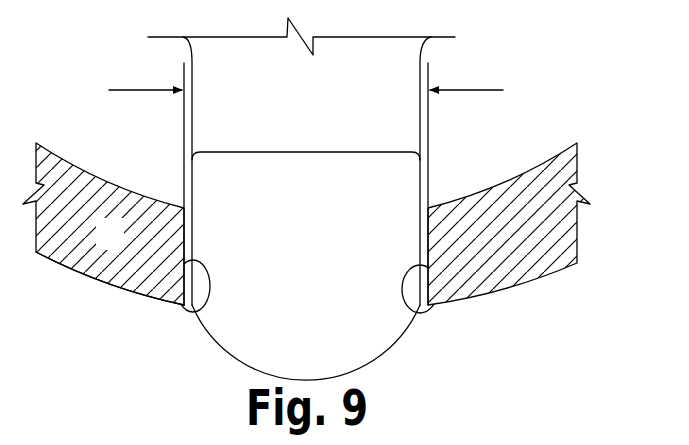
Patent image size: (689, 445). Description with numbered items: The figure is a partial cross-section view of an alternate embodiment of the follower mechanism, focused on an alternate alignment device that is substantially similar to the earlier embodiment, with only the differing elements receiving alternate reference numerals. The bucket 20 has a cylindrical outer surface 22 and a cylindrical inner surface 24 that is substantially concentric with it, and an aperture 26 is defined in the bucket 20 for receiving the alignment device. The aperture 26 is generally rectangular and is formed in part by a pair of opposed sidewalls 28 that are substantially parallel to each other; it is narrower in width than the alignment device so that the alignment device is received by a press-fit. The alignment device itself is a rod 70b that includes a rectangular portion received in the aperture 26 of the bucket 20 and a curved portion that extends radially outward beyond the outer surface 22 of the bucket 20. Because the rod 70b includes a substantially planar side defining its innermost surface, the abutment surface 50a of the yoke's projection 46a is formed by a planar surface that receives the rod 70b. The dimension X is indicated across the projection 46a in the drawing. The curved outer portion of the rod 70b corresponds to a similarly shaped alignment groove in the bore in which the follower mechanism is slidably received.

The bucket 20 is at (120, 247).
The cylindrical outer surface 22 is at (78, 272).
The cylindrical inner surface 24 is at (540, 160).
The aperture 26 is at (182, 195).
The opposed sidewalls 28 is at (192, 305).
The projection 46a is at (320, 107).
The abutment surface 50a is at (335, 152).
The rod 70b is at (320, 264).
The distance X is at (315, 89).